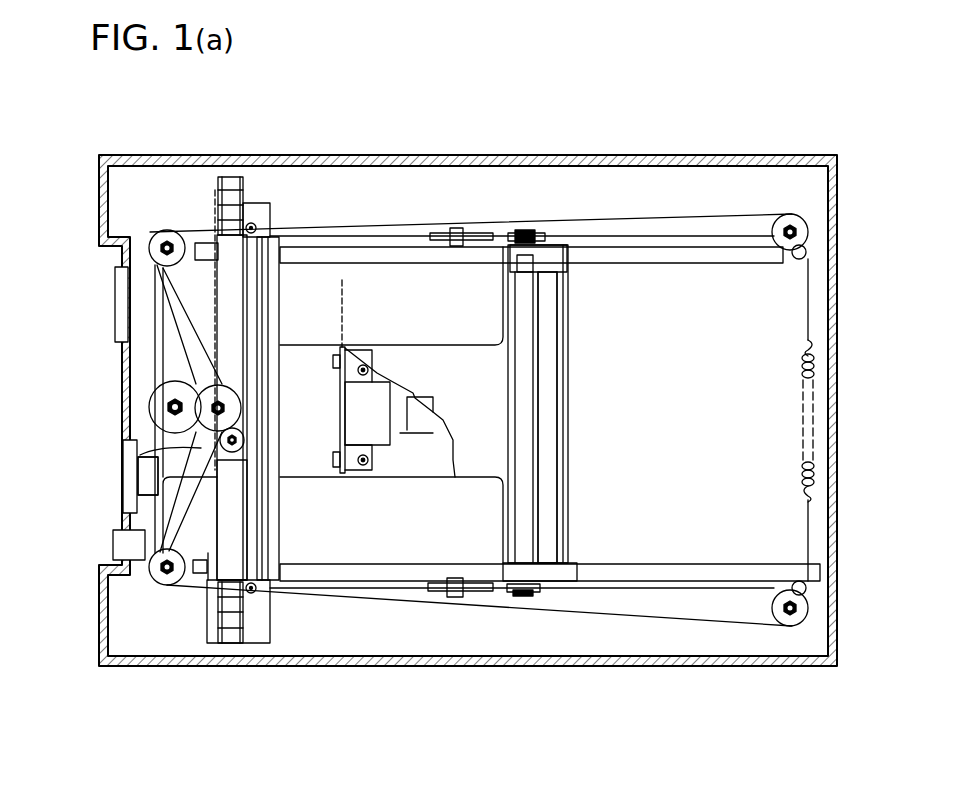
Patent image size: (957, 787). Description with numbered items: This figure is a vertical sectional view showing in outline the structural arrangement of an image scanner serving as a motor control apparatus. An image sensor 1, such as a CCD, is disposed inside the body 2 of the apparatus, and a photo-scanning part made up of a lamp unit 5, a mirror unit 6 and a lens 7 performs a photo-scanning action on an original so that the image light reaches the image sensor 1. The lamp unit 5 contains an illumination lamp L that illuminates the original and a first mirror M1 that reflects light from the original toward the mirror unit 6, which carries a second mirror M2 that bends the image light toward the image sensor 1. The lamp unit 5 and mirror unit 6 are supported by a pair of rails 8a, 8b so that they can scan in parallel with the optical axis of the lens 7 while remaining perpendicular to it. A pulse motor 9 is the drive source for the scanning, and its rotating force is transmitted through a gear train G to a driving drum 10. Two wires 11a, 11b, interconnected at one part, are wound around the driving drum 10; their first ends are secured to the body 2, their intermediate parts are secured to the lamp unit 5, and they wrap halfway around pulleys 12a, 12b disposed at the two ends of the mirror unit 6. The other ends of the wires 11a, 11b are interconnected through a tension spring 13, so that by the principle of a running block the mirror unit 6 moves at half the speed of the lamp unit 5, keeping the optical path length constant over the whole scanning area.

The image sensor 1 is at (345, 427).
The body of the apparatus 2 is at (835, 209).
The lamp unit 5 is at (257, 625).
The mirror unit 6 is at (555, 495).
The lens 7 is at (420, 418).
The rail 8a is at (820, 572).
The rail 8b is at (787, 260).
The pulse motor 9 is at (160, 456).
The driving drum 10 is at (150, 402).
The wire 11a is at (733, 617).
The wire 11b is at (698, 214).
The pulley 12a is at (508, 590).
The pulley 12b is at (520, 230).
The tension spring 13 is at (815, 356).
The gear train G is at (208, 382).
The illumination lamp L is at (230, 615).
The first mirror M1 is at (253, 562).
The second mirror M2 is at (545, 548).